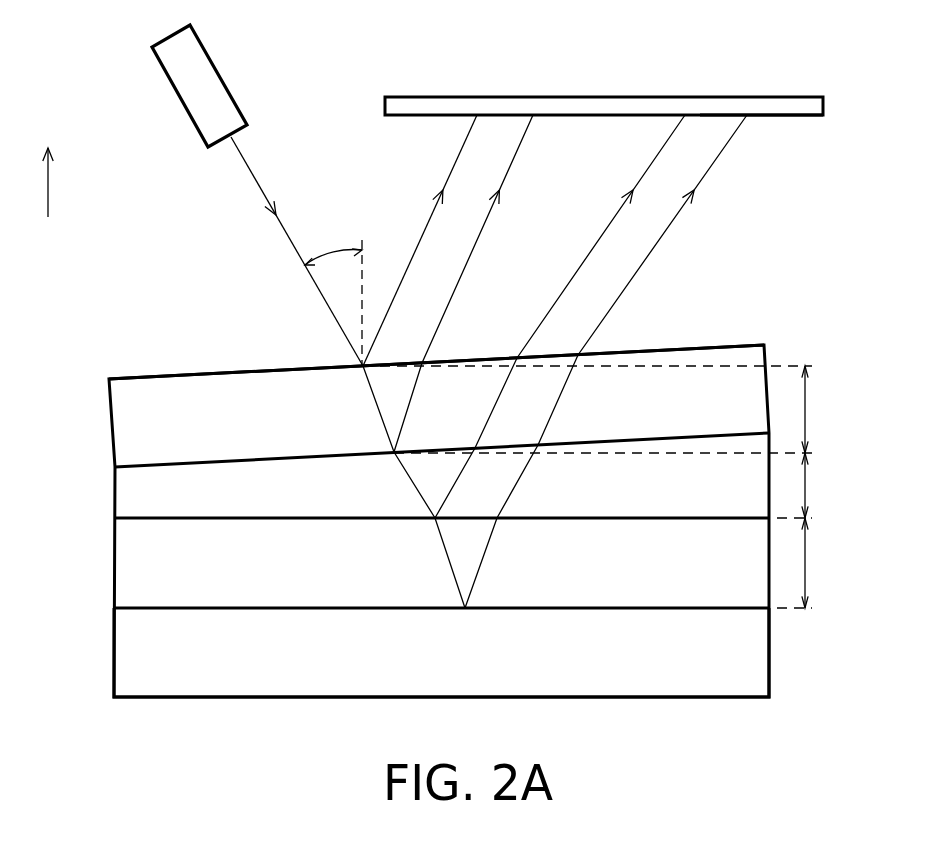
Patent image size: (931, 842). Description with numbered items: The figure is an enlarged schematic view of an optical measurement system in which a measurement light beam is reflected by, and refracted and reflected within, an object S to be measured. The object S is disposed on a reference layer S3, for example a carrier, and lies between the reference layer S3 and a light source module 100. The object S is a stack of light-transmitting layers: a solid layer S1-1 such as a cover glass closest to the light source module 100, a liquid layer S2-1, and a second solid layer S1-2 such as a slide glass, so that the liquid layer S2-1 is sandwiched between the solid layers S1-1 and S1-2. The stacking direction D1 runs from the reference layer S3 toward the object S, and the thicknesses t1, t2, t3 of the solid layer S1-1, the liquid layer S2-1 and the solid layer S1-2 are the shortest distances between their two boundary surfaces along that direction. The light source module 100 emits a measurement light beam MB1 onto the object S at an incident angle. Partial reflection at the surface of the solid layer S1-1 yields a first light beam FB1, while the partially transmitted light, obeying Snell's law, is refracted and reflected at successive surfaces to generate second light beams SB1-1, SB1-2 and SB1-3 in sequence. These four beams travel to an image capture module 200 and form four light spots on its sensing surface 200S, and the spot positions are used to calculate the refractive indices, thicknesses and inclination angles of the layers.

The light source module 100 is at (190, 94).
The image capture module 200 is at (825, 104).
The sensing surface 200S is at (787, 117).
The stacking direction D1 is at (49, 167).
The measurement light beam MB1 is at (253, 178).
The first light beam FB1 is at (457, 156).
The second light beam SB1-1 is at (515, 155).
The second light beam SB1-2 is at (563, 288).
The second light beam SB1-3 is at (653, 247).
The object to be measured S is at (748, 322).
The solid layer S1-1 is at (118, 426).
The liquid layer S2-1 is at (118, 496).
The solid layer S1-2 is at (118, 563).
The reference layer S3 is at (118, 656).
The thickness t1 is at (819, 409).
The thickness t2 is at (819, 485).
The thickness t3 is at (819, 563).